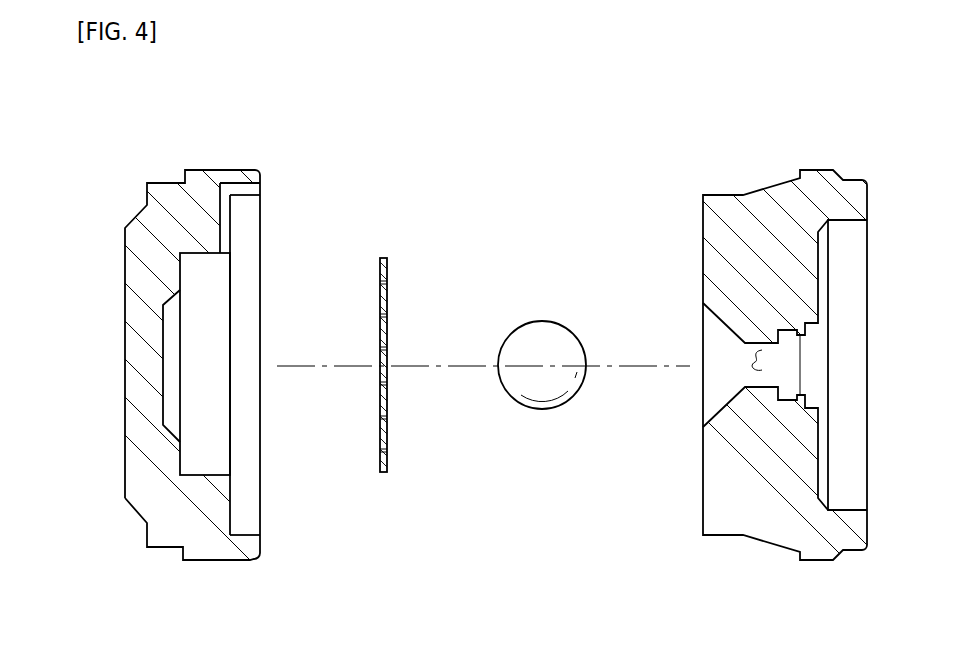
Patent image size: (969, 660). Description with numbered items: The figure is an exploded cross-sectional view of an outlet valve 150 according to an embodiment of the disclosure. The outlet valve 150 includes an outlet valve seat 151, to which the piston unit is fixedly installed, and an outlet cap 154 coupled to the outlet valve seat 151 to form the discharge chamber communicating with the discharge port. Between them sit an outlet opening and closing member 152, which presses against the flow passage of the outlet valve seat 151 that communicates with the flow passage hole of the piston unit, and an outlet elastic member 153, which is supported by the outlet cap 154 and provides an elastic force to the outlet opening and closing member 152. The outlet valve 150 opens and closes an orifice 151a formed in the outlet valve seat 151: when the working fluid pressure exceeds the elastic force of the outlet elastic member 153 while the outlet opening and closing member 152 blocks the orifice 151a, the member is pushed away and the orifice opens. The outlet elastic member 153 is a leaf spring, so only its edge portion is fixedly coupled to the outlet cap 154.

The outlet valve 150 is at (517, 113).
The outlet valve seat 151 is at (627, 330).
The orifice 151a is at (757, 360).
The outlet opening and closing member 152 is at (542, 409).
The outlet elastic member 153 is at (383, 472).
The outlet cap 154 is at (210, 556).